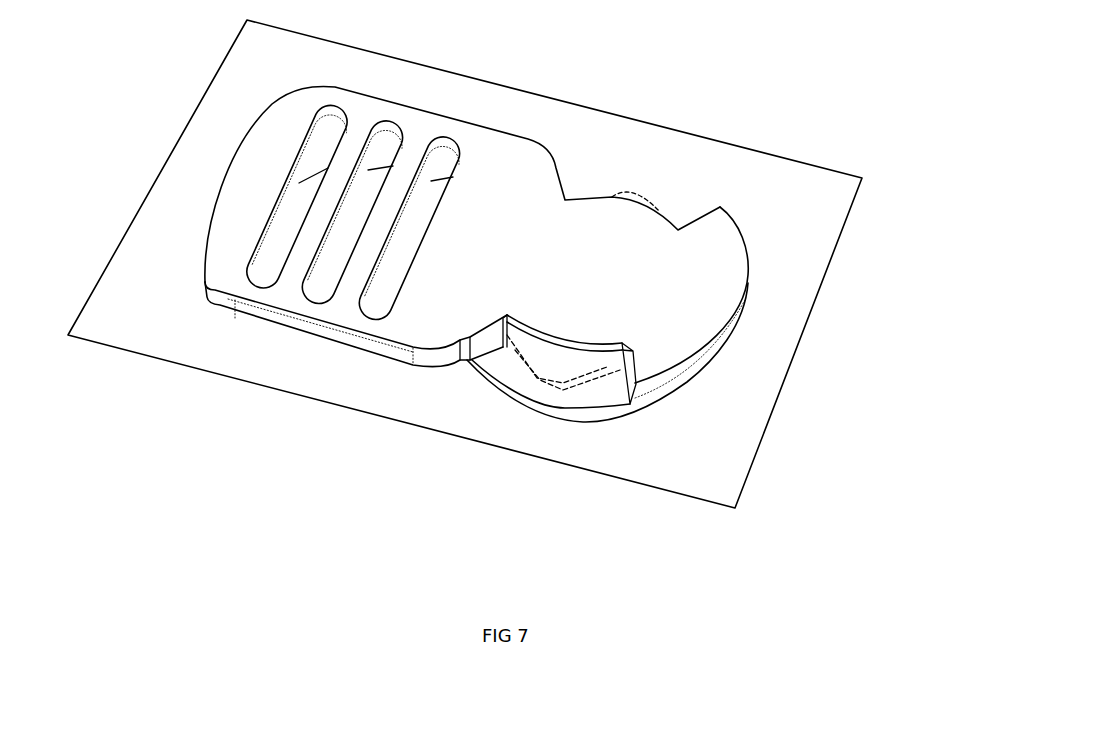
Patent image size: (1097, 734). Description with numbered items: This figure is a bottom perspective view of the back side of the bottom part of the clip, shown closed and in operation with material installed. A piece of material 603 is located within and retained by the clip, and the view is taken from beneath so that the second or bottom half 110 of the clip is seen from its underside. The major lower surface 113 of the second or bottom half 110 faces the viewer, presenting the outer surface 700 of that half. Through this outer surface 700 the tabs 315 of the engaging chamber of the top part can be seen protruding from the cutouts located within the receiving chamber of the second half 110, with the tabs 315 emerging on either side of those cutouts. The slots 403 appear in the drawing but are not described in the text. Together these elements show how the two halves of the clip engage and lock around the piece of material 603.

The second or bottom half 110 is at (455, 117).
The major lower surface 113 is at (513, 198).
The tabs 315 is at (558, 388).
The slots 403 is at (275, 250).
The piece of material 603 is at (790, 177).
The outer surface 700 is at (352, 423).